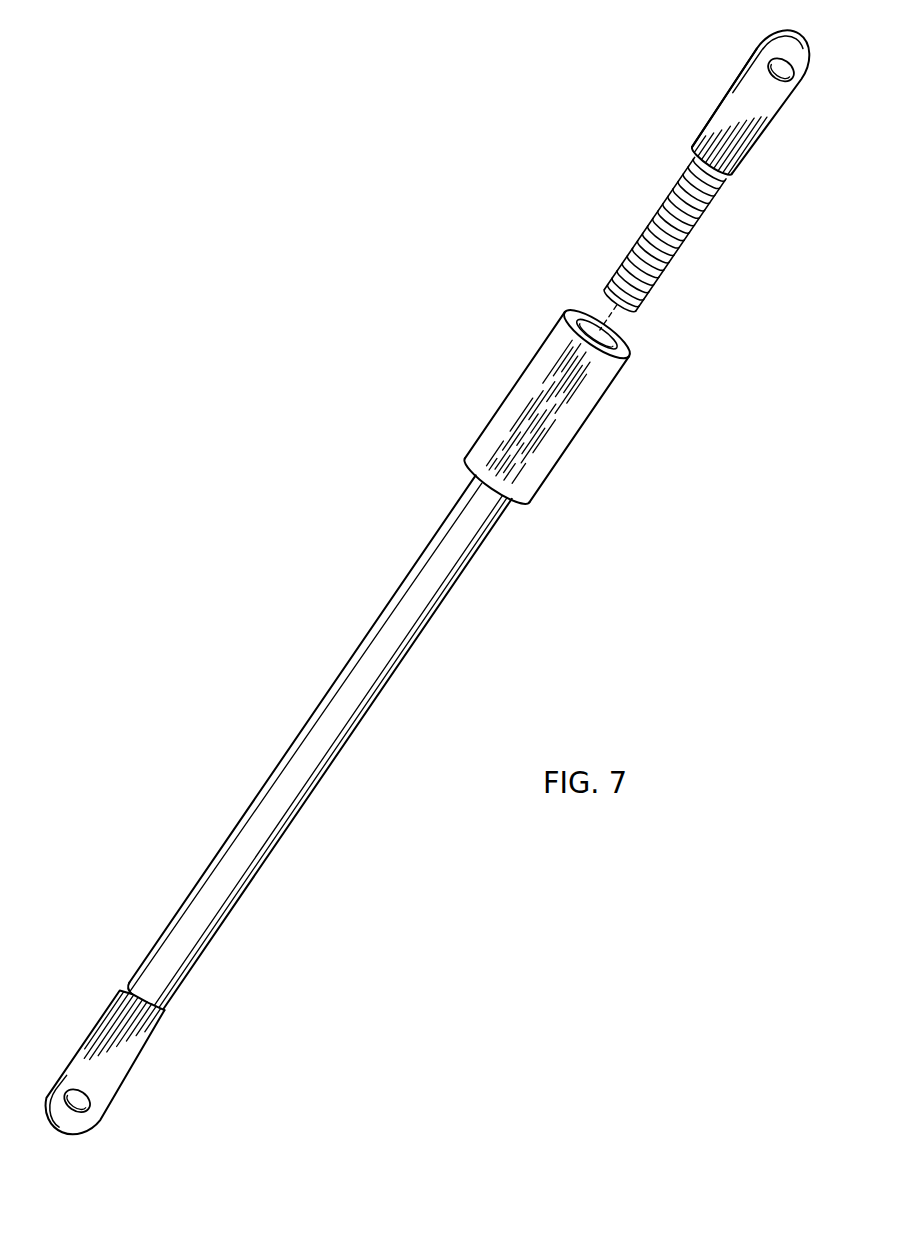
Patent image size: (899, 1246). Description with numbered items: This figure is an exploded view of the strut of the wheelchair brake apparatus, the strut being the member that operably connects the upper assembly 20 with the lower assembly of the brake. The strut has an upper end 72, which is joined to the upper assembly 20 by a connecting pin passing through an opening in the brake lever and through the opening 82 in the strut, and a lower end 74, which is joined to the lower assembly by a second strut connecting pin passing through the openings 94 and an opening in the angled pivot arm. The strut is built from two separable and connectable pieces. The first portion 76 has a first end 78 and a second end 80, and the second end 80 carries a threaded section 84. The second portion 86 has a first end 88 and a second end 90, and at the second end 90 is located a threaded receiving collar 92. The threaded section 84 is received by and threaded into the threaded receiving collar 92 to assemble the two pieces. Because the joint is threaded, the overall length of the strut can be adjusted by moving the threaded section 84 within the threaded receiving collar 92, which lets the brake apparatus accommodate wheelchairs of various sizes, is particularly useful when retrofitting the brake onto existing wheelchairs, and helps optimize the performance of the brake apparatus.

The upper assembly 20 is at (327, 502).
The upper end 72 is at (776, 97).
The lower end 74 is at (103, 1070).
The first portion 76 is at (739, 144).
The first end 78 is at (718, 98).
The second end 80 is at (631, 319).
The opening 82 is at (804, 86).
The threaded section 84 is at (672, 234).
The second portion 86 is at (318, 744).
The first end 88 is at (128, 1047).
The second end 90 is at (578, 315).
The threaded receiving collar 92 is at (547, 406).
The openings 94 is at (60, 1073).